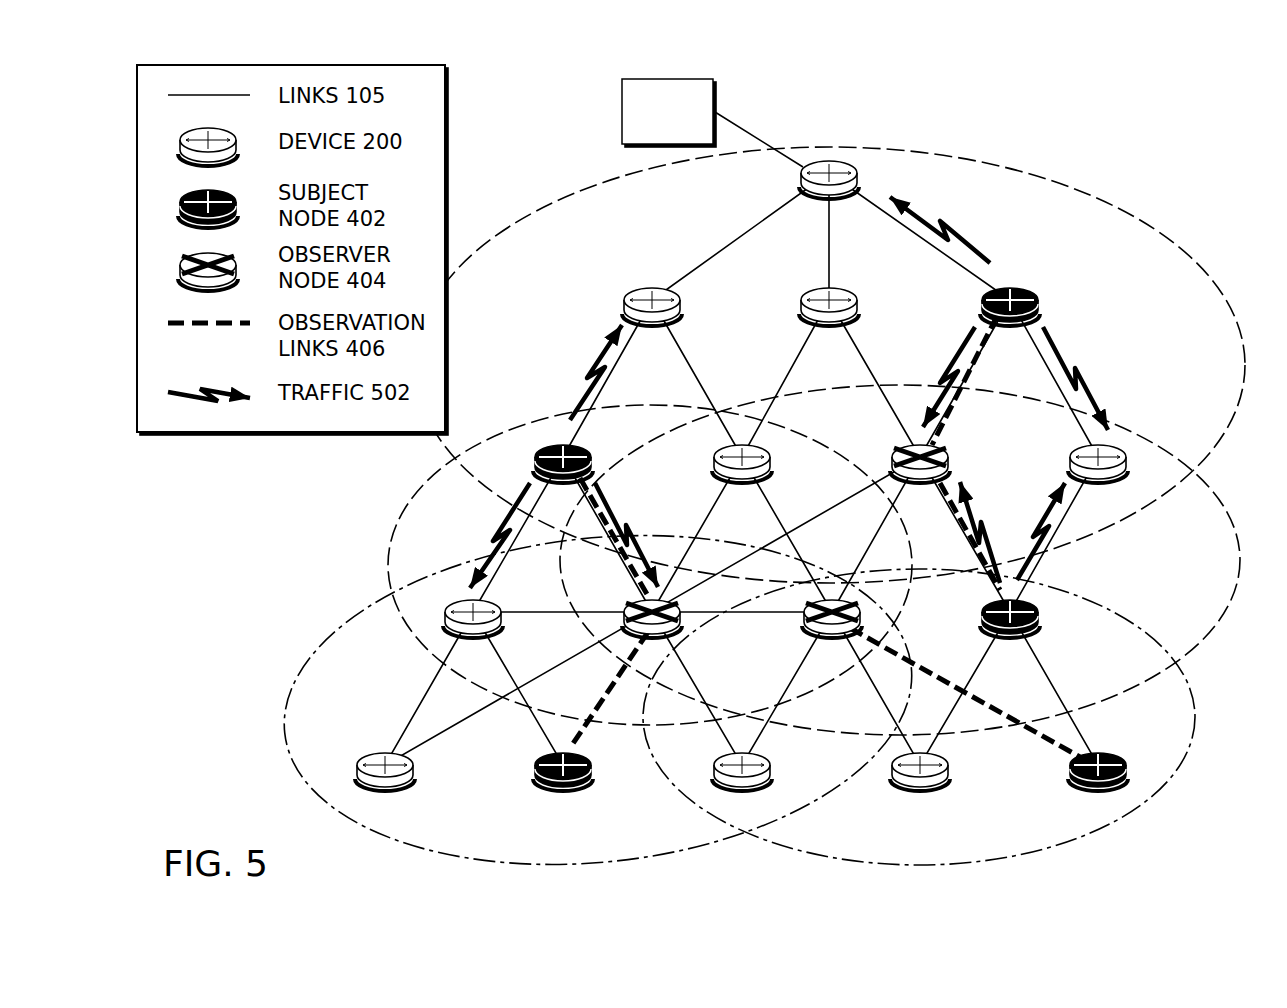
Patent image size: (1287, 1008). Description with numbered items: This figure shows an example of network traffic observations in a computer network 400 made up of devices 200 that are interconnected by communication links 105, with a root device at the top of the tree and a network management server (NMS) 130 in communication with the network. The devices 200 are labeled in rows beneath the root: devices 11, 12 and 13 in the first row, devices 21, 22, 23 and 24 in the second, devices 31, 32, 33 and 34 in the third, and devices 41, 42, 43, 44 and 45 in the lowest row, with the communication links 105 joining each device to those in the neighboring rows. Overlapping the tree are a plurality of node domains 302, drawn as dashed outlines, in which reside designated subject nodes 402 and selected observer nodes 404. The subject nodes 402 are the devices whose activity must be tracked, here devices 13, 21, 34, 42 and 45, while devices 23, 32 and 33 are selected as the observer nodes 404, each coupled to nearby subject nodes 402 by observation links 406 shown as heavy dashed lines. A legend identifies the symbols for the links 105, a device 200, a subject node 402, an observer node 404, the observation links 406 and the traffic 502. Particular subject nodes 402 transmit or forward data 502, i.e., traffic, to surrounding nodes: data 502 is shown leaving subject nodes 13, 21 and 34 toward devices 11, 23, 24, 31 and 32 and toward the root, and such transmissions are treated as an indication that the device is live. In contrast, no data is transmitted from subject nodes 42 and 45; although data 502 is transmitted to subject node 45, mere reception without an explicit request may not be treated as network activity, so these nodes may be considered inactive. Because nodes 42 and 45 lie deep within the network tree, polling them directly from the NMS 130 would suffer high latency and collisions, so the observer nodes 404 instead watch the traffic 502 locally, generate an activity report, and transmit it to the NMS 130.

The communication links 105 is at (633, 424).
The device 200 is at (653, 477).
The subject node 402 is at (653, 504).
The observer node 404 is at (607, 458).
The observation link 406 is at (970, 362).
The data 502 is at (583, 362).
The network management server (NMS) 130 is at (651, 138).
The node domain 302 is at (1146, 294).
The computer network 400 is at (1183, 127).
The device '11' 11 is at (652, 325).
The device '12' 12 is at (829, 325).
The subject node '13' 13 is at (1010, 325).
The subject node '21' 21 is at (563, 481).
The device '22' 22 is at (742, 481).
The observer node '23' 23 is at (920, 481).
The device '24' 24 is at (1098, 481).
The device '31' 31 is at (473, 636).
The observer node '32' 32 is at (652, 636).
The observer node '33' 33 is at (832, 636).
The subject node '34' 34 is at (1010, 636).
The device '41' 41 is at (385, 790).
The subject node '42' 42 is at (563, 790).
The device '43' 43 is at (742, 790).
The device '44' 44 is at (920, 790).
The subject node '45' 45 is at (1098, 790).